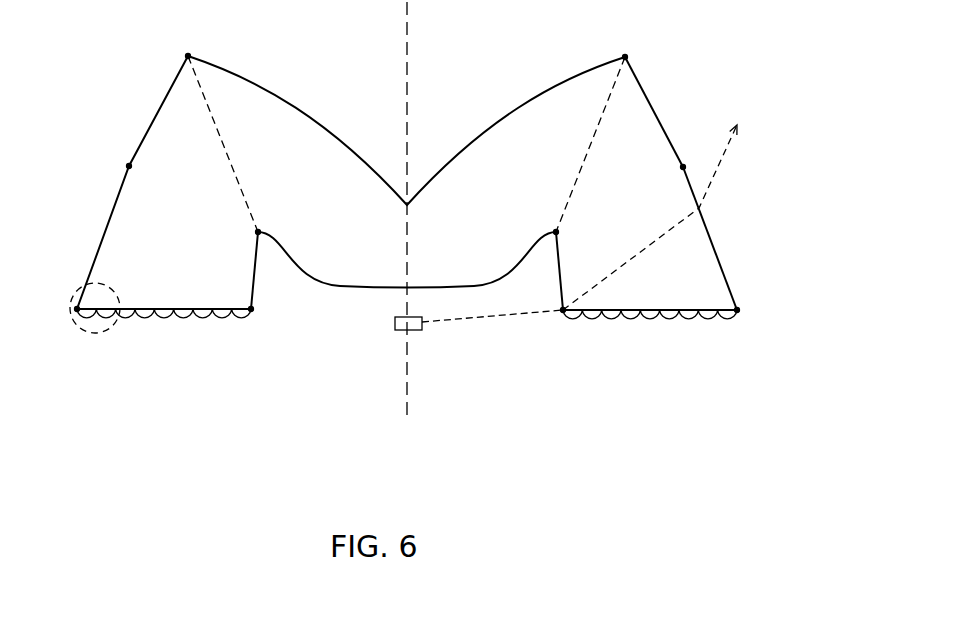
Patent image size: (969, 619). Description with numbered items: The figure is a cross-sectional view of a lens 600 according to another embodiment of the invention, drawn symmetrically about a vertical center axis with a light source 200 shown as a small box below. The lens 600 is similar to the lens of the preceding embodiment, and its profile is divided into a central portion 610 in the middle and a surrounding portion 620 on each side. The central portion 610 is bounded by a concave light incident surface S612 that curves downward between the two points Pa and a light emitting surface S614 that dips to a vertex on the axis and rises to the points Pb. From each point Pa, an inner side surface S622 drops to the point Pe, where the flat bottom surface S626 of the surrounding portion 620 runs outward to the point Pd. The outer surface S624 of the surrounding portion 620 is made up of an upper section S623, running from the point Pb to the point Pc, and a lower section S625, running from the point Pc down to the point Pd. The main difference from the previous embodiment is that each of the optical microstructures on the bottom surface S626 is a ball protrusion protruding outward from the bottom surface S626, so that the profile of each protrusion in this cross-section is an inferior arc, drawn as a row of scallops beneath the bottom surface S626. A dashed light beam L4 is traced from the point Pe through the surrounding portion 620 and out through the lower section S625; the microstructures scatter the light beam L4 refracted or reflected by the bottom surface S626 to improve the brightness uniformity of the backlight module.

The lens 600 is at (838, 477).
The central portion of the lens 610 is at (250, 108).
The surrounding portion of the lens 620 is at (167, 133).
The light source 200 is at (395, 323).
The light incident surface of the central portion S612 is at (327, 292).
The light emitting surface of the central portion S614 is at (333, 124).
The inner side surface of the surrounding portion S622 is at (549, 268).
The first outer surface section of the surrounding portion S623 is at (639, 66).
The outer surface of the surrounding portion S624 is at (783, 6).
The second outer surface section of the surrounding portion S625 is at (733, 270).
The bottom surface S626 is at (713, 325).
The light beam L4 is at (718, 167).
The point Pa is at (409, 214).
The point Pb is at (406, 40).
The point Pc is at (401, 151).
The point Pd is at (411, 327).
The point Pe is at (410, 330).